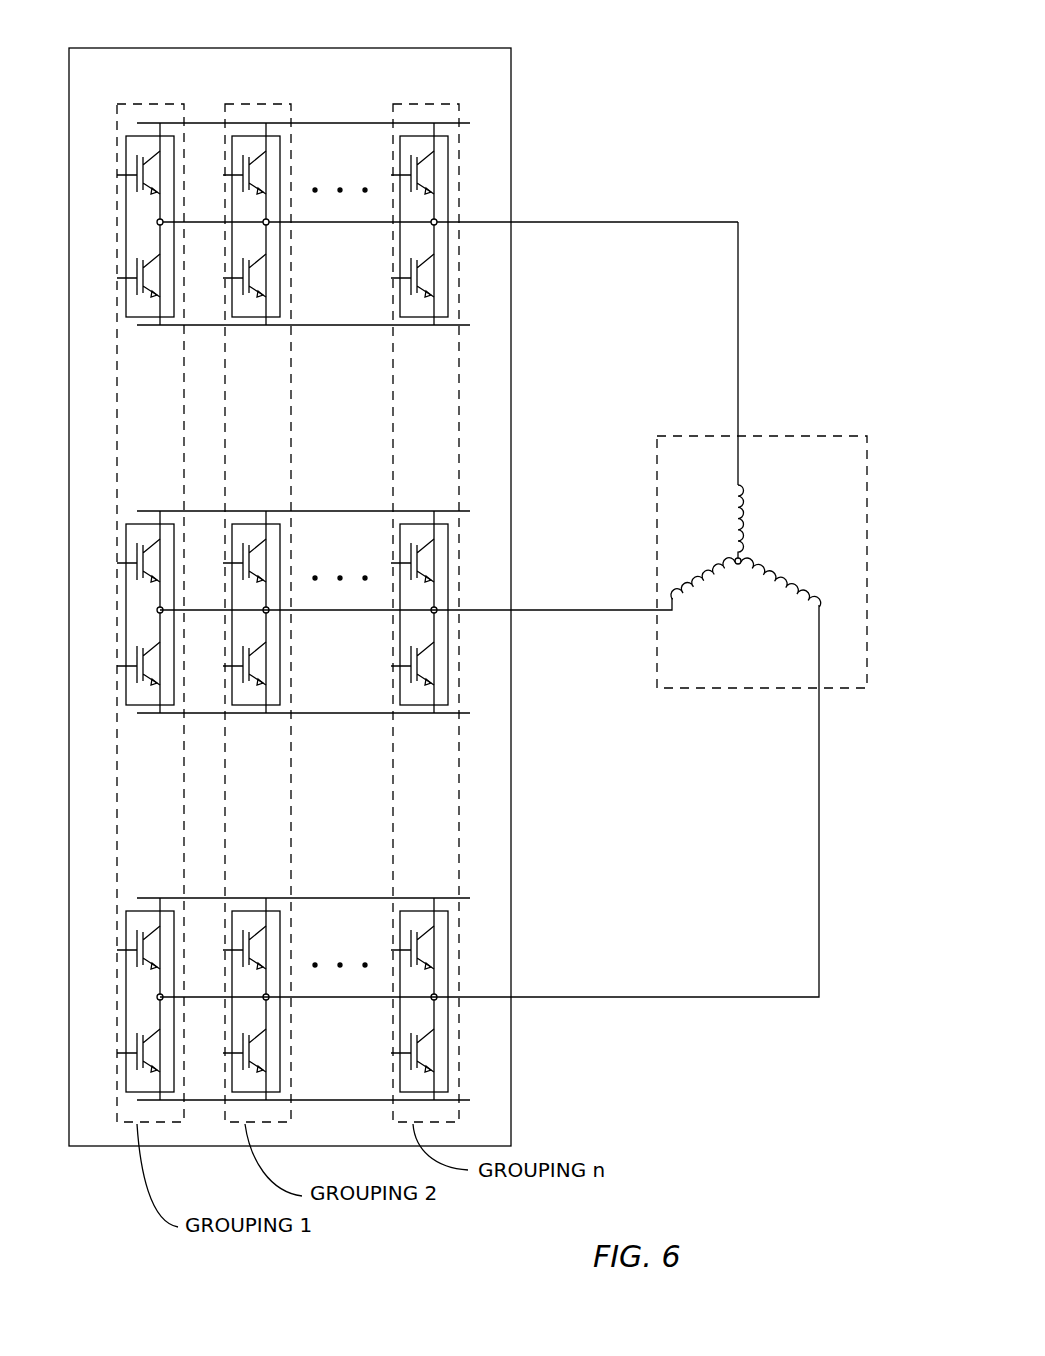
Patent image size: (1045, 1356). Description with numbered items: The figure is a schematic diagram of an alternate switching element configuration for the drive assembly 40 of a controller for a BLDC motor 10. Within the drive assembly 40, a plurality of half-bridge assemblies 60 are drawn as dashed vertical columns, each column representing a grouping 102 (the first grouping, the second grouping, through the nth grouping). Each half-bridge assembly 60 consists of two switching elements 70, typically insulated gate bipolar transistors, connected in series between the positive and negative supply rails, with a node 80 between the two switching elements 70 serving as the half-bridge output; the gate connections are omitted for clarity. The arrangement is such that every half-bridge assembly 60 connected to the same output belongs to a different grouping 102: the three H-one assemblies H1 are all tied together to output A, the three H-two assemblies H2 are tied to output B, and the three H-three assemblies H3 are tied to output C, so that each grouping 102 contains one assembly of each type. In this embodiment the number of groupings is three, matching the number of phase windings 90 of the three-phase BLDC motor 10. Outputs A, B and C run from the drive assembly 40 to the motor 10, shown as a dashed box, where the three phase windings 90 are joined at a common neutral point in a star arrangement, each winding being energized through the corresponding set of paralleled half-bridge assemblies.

The BLDC motor 10 is at (762, 455).
The drive assembly 40 is at (400, 47).
The half-bridge assembly 60 is at (136, 104).
The switching element 70 is at (118, 145).
The node 80 is at (157, 221).
The phase winding 90 is at (752, 520).
The grouping 102 is at (408, 104).
The H-1 half-bridge assembly H1 is at (380, 257).
The H-2 half-bridge assembly H2 is at (134, 705).
The H-3 half-bridge assembly H3 is at (134, 1092).